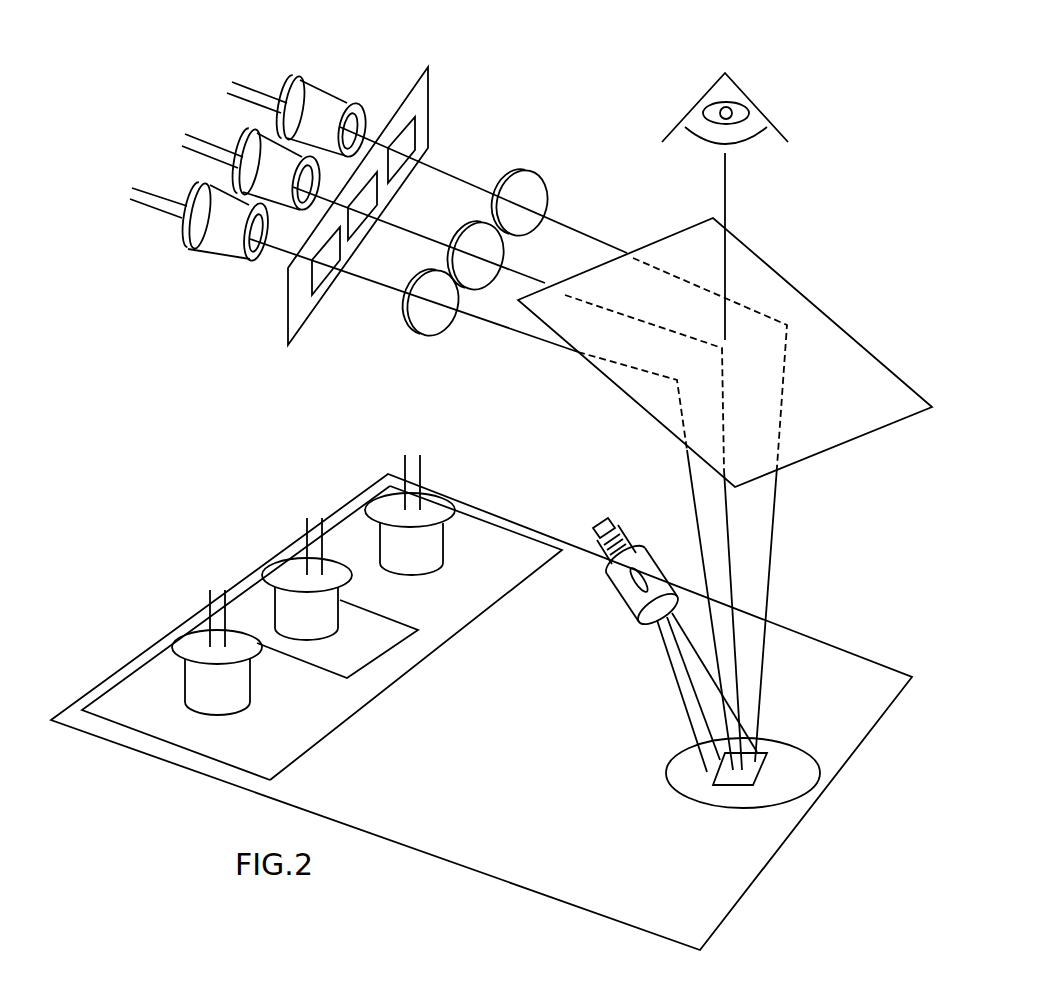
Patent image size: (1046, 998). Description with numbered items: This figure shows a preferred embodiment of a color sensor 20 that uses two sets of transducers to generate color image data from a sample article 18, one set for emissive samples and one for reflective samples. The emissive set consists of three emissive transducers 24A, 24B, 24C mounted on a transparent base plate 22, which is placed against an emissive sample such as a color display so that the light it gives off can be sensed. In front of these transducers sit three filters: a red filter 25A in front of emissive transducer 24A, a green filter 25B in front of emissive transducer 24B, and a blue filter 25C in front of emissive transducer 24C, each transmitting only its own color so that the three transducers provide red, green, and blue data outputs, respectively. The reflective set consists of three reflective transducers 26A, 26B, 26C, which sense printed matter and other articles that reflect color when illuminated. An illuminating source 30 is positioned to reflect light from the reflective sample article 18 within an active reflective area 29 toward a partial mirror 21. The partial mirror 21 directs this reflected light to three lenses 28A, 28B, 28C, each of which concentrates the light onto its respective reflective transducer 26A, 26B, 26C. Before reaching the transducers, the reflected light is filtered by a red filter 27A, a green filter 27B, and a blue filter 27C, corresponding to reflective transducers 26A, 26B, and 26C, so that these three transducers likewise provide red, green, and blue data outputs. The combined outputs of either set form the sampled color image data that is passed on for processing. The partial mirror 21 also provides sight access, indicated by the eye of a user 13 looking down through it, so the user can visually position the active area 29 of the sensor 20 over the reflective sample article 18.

The user 13 is at (752, 103).
The sample article 18 is at (743, 787).
The sensor 20 is at (912, 252).
The partial mirror 21 is at (843, 452).
The transparent base plate 22 is at (435, 858).
The emissive transducer 24A is at (205, 693).
The emissive transducer 24B is at (300, 610).
The emissive transducer 24C is at (405, 548).
The red filter 25A is at (290, 722).
The green filter 25B is at (408, 638).
The blue filter 25C is at (493, 580).
The reflective transducer 26A is at (215, 210).
The reflective transducer 26B is at (268, 163).
The reflective transducer 26C is at (317, 100).
The red filter 27A is at (317, 282).
The green filter 27B is at (353, 208).
The blue filter 27C is at (416, 122).
The lens 28A is at (424, 336).
The lens 28B is at (495, 277).
The lens 28C is at (545, 187).
The active reflective area 29 is at (800, 795).
The illuminating source 30 is at (620, 524).